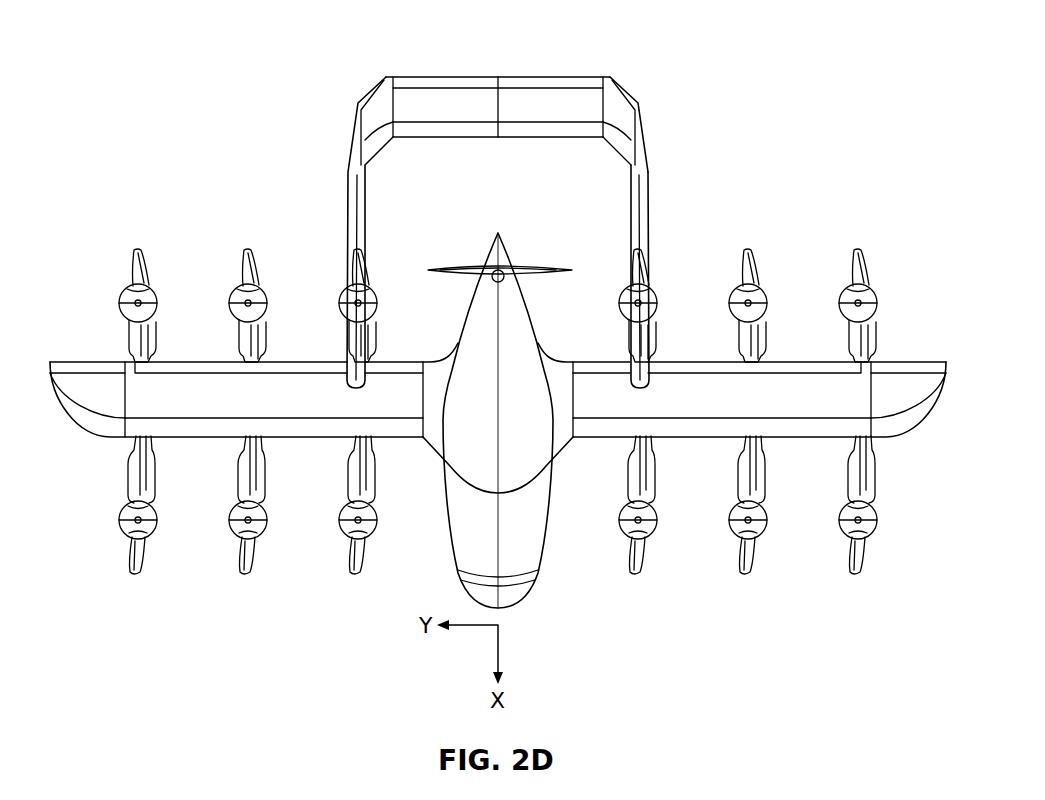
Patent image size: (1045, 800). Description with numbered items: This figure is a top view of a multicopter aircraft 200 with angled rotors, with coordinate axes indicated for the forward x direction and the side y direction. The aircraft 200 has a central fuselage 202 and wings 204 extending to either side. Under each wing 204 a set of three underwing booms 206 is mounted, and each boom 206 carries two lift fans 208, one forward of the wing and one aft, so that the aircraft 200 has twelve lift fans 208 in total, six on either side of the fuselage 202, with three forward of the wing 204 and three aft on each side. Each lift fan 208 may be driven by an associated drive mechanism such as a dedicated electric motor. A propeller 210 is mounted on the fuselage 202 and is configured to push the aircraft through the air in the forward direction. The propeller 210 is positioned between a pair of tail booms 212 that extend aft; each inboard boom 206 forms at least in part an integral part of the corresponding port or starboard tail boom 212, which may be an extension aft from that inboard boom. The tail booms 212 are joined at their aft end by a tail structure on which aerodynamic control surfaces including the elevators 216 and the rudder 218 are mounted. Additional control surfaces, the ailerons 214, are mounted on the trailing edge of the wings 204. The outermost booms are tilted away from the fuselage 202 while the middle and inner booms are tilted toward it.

The aircraft 200 is at (214, 45).
The fuselage 202 is at (545, 578).
The wings 204 is at (80, 425).
The underwing boom 206 is at (183, 258).
The lift fan 208 is at (118, 302).
The propeller 210 is at (540, 266).
The tail boom 212 is at (650, 183).
The ailerons 214 is at (288, 362).
The elevators 216 is at (523, 75).
The rudder 218 is at (628, 88).